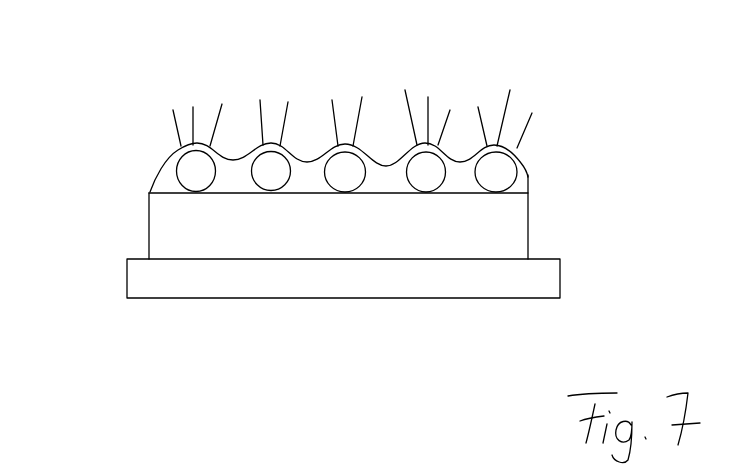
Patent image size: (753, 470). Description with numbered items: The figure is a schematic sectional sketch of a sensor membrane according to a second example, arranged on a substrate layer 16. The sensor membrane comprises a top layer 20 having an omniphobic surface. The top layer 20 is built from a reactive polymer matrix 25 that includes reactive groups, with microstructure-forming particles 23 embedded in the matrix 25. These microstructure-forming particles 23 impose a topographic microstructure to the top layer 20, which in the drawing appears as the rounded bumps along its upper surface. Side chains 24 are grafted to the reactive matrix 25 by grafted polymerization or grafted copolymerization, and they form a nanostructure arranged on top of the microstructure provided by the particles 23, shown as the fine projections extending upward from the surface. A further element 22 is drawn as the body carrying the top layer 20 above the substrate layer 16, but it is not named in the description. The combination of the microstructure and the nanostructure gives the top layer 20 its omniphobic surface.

The substrate layer 16 is at (561, 277).
The top layer 20 is at (148, 150).
The housing 22 is at (518, 227).
The microstructure-forming particles 23 is at (205, 206).
The side chains 24 is at (389, 78).
The reactive polymer matrix 25 is at (307, 178).